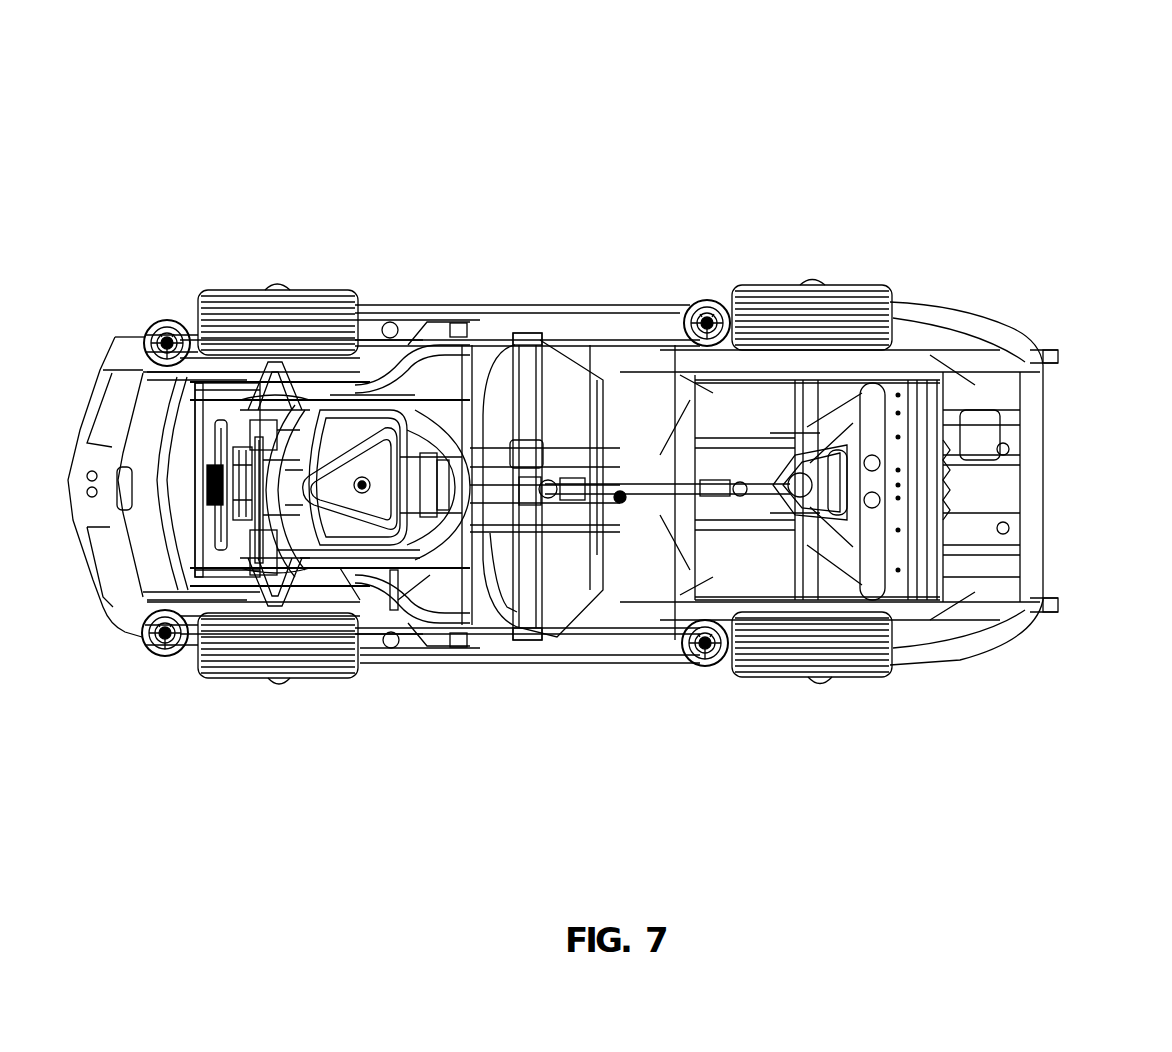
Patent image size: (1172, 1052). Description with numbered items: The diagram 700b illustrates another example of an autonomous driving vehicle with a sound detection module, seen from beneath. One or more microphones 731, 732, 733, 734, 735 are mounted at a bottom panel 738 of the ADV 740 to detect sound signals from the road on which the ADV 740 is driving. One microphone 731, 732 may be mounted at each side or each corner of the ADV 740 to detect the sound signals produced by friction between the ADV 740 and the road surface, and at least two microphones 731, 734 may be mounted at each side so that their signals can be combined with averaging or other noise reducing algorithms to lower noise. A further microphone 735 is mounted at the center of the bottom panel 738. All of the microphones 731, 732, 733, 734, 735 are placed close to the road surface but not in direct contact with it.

The diagram 700b is at (617, 413).
The microphone 731 is at (158, 647).
The microphone 732 is at (163, 335).
The microphone 733 is at (705, 320).
The microphone 734 is at (712, 647).
The microphone 735 is at (620, 500).
The bottom panel 738 is at (487, 335).
The ADV 740 is at (352, 558).